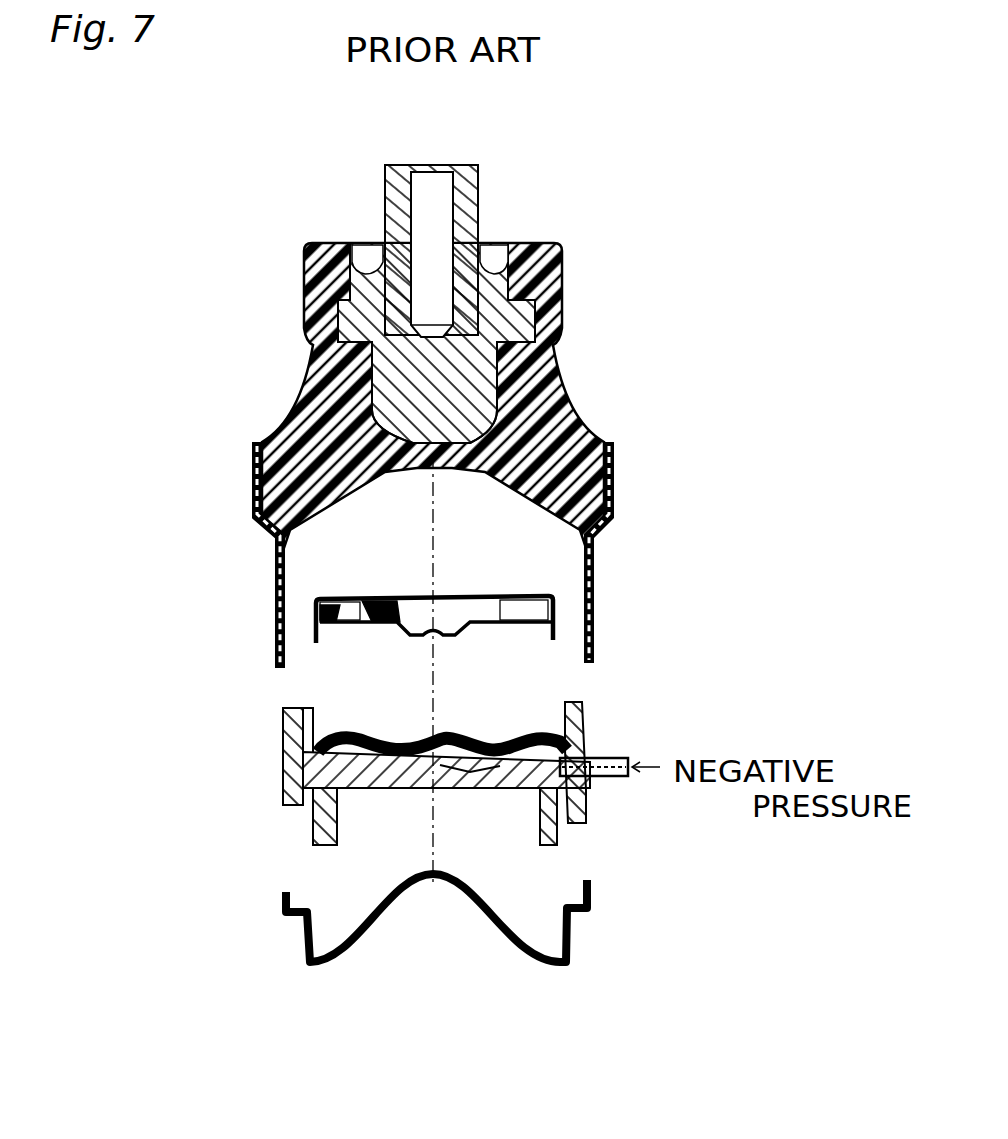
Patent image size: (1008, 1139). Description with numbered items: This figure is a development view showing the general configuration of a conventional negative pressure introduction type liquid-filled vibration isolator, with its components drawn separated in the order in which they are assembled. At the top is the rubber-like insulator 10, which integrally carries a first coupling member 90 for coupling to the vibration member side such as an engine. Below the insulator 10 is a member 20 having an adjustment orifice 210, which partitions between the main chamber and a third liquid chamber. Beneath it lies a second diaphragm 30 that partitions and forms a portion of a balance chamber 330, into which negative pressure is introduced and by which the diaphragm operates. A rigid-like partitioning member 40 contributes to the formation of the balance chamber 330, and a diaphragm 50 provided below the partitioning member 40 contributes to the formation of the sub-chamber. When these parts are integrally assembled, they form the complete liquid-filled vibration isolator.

The rubber-like insulator 10 is at (568, 376).
The first coupling member 90 is at (470, 175).
The partitioning member having adjustment orifice 20 is at (458, 598).
The adjustment orifice 210 is at (342, 600).
The second diaphragm 30 is at (458, 748).
The balance chamber 330 is at (483, 770).
The partitioning member 40 is at (588, 796).
The diaphragm 50 is at (494, 912).